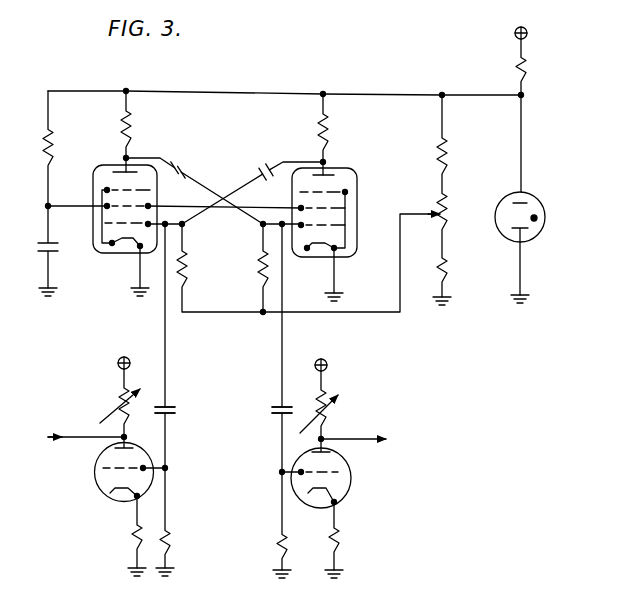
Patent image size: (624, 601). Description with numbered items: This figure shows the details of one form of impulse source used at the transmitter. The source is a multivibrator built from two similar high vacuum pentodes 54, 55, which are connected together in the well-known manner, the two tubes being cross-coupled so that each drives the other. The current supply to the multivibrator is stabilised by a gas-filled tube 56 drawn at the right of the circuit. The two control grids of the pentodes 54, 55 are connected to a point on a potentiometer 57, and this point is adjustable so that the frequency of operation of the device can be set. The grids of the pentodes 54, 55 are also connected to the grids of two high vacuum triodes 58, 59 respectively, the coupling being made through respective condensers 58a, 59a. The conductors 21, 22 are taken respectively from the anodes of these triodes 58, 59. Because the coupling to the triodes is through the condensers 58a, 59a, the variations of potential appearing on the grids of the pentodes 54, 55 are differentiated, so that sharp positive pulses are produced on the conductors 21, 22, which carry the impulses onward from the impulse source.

The conductor 21 is at (77, 436).
The conductor 22 is at (368, 439).
The pentode 54 is at (156, 163).
The pentode 55 is at (348, 170).
The gas-filled tube 56 is at (540, 234).
The potentiometer 57 is at (443, 188).
The high vacuum triode 58 is at (112, 500).
The condenser 58a is at (172, 412).
The high vacuum triode 59 is at (345, 497).
The condenser 59a is at (273, 410).